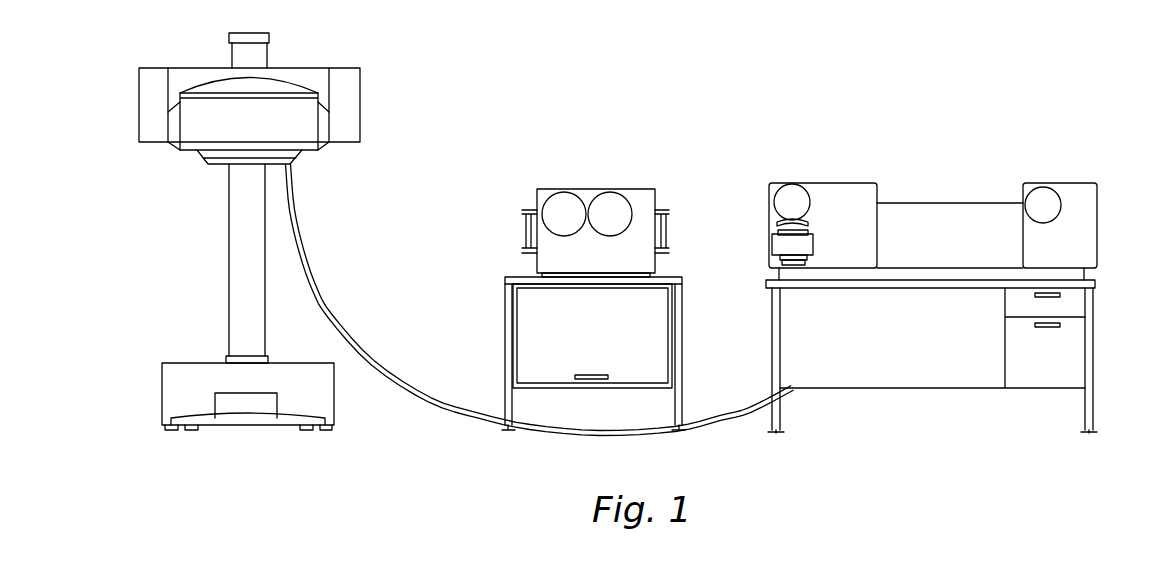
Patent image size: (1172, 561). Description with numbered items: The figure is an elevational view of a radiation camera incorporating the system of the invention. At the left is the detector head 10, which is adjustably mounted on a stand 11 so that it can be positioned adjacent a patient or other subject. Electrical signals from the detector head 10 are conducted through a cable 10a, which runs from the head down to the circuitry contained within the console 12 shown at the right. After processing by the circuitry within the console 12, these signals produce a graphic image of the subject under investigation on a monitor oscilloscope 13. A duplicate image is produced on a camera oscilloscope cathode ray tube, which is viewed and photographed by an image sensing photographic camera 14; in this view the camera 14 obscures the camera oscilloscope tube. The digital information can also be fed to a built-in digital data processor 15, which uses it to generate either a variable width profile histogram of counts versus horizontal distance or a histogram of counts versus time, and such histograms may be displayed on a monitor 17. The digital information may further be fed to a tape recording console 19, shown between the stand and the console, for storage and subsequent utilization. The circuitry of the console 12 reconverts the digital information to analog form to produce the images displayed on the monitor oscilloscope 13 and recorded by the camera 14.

The detector head 10 is at (205, 172).
The cable 10a is at (367, 352).
The stand 11 is at (229, 253).
The console 12 is at (920, 401).
The monitor oscilloscope 13 is at (806, 190).
The image sensing photographic camera 14 is at (777, 244).
The digital data processor 15 is at (1080, 181).
The monitor 17 is at (1033, 187).
The tape recording console 19 is at (597, 179).